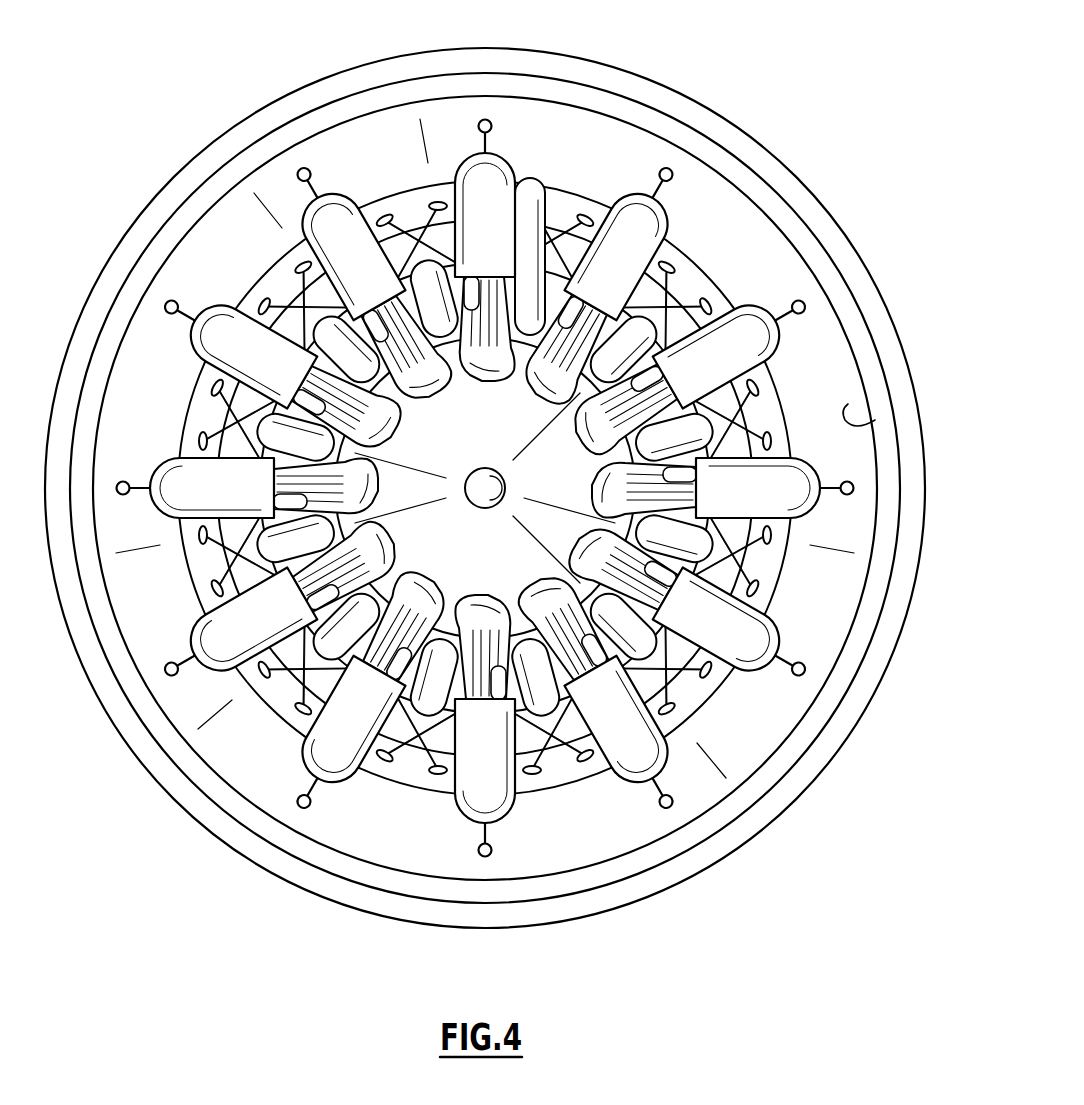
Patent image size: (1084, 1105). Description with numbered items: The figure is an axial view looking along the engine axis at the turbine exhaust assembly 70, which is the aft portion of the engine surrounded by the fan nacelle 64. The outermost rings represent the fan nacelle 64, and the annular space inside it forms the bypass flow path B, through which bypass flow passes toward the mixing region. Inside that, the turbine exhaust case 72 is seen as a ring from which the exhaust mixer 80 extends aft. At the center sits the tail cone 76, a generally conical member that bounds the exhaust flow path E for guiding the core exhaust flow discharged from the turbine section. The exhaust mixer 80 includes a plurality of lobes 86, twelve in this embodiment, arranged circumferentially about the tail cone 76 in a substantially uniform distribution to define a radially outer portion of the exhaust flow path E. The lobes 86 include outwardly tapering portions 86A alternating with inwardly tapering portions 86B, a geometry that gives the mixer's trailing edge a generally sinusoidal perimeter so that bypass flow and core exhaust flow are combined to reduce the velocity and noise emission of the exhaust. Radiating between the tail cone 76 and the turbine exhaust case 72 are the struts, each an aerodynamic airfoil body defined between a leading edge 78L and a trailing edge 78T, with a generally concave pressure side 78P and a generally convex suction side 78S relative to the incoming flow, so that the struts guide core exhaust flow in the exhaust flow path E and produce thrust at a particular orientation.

The fan nacelle 64 is at (350, 66).
The turbine exhaust assembly 70 is at (249, 226).
The turbine exhaust case 72 is at (746, 561).
The tail cone 76 is at (707, 440).
The leading edge 78L is at (485, 434).
The pressure side 78P is at (640, 330).
The suction side 78S is at (378, 577).
The trailing edge 78T is at (607, 368).
The exhaust mixer 80 is at (465, 157).
The lobes 86 is at (484, 379).
The outwardly tapering portions 86A is at (513, 163).
The inwardly tapering portions 86B is at (536, 392).
The bypass flow path B is at (875, 420).
The exhaust flow path E is at (775, 488).